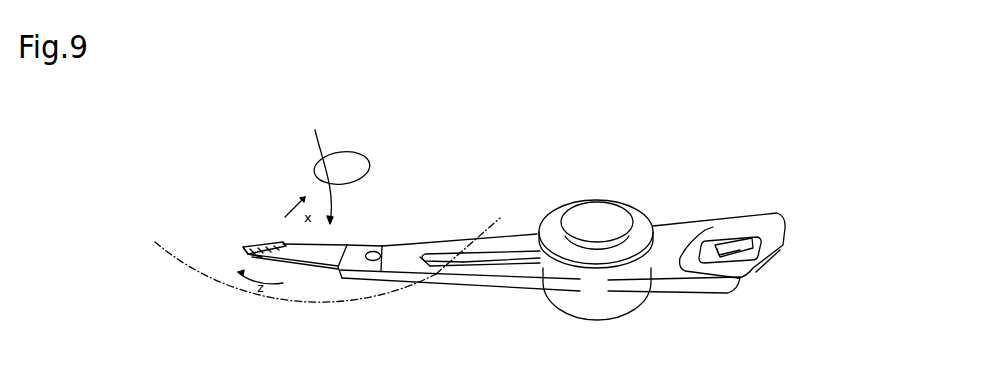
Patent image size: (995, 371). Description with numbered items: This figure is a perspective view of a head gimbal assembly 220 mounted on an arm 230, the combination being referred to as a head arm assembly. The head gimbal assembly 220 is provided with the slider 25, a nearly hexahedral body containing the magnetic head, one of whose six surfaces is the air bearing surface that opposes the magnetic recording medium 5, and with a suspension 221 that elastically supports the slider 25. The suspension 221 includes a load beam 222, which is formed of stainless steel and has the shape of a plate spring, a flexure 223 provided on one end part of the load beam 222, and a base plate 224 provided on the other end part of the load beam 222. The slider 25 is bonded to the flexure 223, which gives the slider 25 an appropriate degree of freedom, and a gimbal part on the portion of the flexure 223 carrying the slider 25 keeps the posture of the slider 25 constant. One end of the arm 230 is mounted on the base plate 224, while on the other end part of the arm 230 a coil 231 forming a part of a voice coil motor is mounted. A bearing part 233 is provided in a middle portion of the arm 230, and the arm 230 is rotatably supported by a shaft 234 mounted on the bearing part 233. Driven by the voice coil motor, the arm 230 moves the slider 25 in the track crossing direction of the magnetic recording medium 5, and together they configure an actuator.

The magnetic recording medium 5 is at (277, 302).
The slider 25 is at (267, 240).
The head gimbal assembly 220 is at (335, 283).
The suspension 221 is at (334, 162).
The load beam 222 is at (350, 238).
The flexure 223 is at (245, 247).
The base plate 224 is at (395, 247).
The arm 230 is at (448, 283).
The coil 231 is at (773, 262).
The bearing part 233 is at (542, 222).
The shaft 234 is at (605, 212).